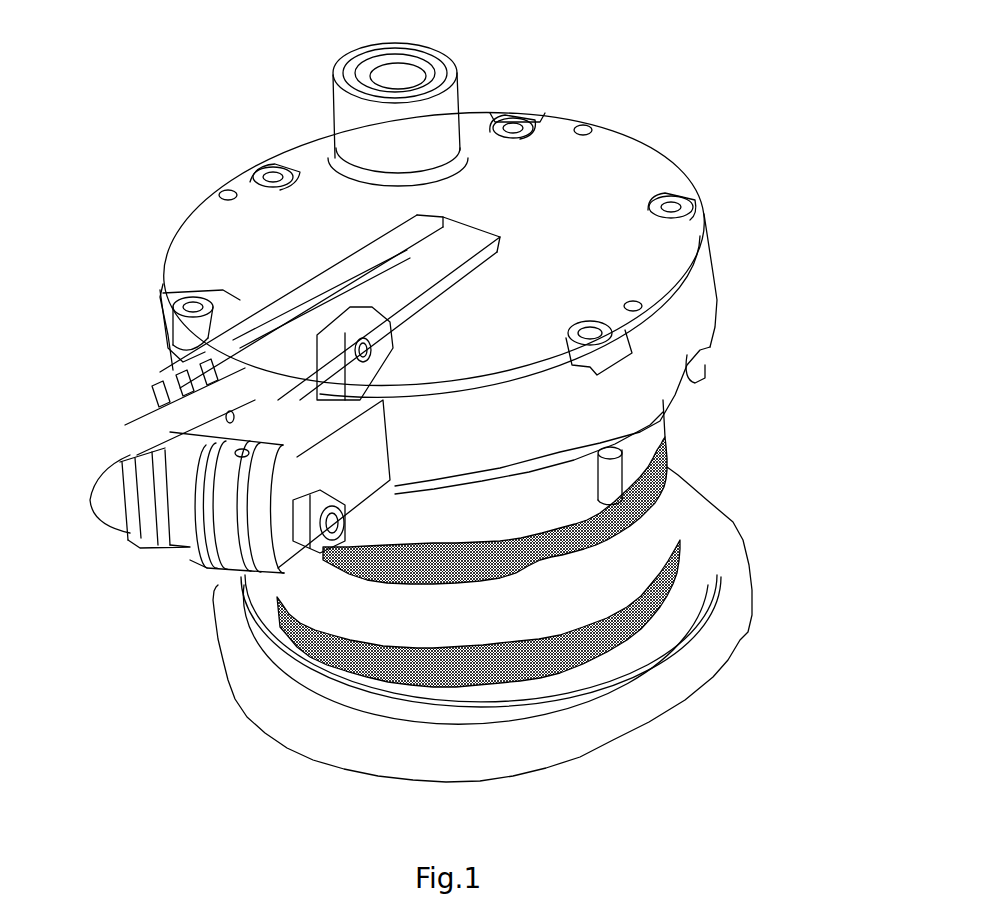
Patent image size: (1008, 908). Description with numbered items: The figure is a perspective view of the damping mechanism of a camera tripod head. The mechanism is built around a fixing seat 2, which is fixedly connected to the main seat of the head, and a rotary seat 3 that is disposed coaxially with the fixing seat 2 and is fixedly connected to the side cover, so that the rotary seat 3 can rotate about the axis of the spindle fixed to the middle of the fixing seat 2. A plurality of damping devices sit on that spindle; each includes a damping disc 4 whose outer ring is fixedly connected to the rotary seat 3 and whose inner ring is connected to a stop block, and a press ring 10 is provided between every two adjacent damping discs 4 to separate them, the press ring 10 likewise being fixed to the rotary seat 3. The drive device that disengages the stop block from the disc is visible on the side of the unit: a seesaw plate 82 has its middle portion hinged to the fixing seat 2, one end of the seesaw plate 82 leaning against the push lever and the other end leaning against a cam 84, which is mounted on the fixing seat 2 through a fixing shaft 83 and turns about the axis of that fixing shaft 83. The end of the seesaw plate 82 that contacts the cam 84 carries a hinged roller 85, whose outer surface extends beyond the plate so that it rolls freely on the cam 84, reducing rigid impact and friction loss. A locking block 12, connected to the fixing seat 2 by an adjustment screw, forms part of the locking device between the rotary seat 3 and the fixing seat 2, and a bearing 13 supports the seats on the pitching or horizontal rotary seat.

The fixing seat 2 is at (680, 347).
The rotary seat 3 is at (697, 560).
The damping disc 4 is at (668, 465).
The press ring 10 is at (640, 435).
The locking block 12 is at (400, 75).
The bearing 13 is at (710, 657).
The seesaw plate 82 is at (220, 300).
The fixing shaft 83 is at (389, 482).
The cam 84 is at (143, 500).
The roller 85 is at (160, 387).